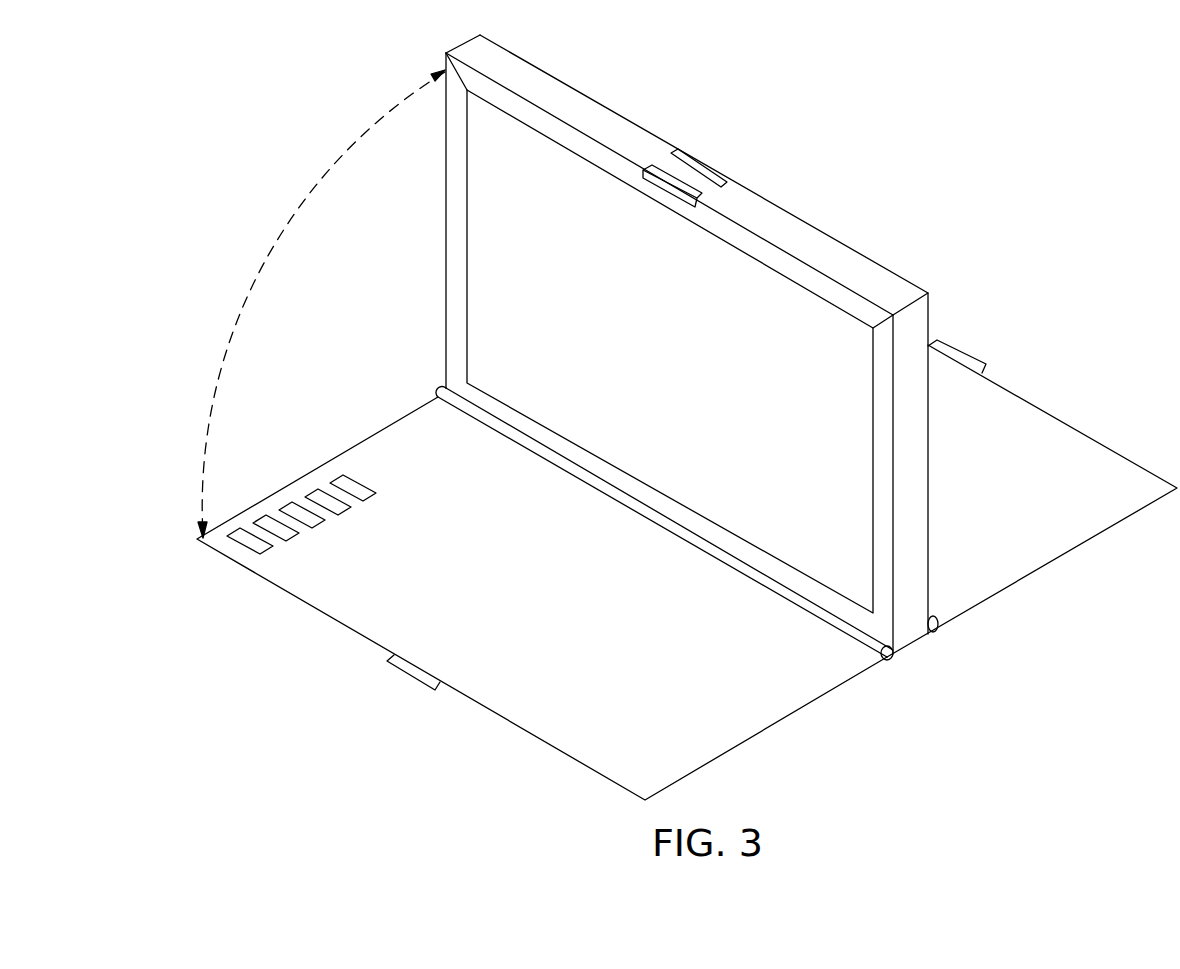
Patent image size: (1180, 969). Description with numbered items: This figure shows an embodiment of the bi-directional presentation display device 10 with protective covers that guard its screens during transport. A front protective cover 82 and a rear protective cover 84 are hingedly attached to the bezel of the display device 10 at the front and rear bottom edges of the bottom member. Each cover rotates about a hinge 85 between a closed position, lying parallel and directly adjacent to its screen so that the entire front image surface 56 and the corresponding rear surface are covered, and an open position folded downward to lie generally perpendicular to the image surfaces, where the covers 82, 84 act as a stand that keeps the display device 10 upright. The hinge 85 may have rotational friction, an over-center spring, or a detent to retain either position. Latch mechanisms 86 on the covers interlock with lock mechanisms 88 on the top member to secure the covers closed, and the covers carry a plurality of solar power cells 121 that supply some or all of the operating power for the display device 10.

The presentation display device 10 is at (917, 207).
The front image surface 56 is at (642, 380).
The front protective cover 82 is at (514, 609).
The rear protective cover 84 is at (981, 505).
The hinge 85 is at (937, 632).
The latch mechanism 86 is at (957, 350).
The lock mechanism 88 is at (703, 163).
The solar power cells 121 is at (340, 472).